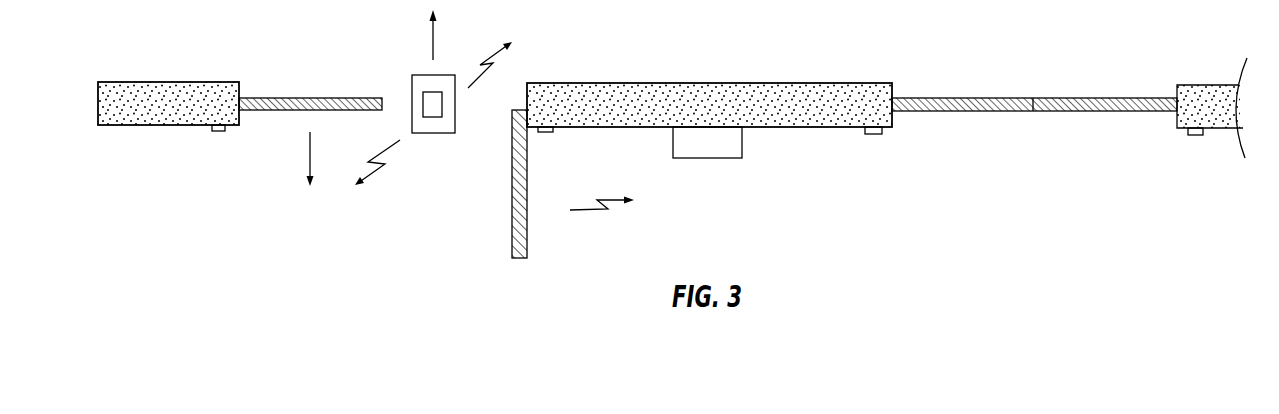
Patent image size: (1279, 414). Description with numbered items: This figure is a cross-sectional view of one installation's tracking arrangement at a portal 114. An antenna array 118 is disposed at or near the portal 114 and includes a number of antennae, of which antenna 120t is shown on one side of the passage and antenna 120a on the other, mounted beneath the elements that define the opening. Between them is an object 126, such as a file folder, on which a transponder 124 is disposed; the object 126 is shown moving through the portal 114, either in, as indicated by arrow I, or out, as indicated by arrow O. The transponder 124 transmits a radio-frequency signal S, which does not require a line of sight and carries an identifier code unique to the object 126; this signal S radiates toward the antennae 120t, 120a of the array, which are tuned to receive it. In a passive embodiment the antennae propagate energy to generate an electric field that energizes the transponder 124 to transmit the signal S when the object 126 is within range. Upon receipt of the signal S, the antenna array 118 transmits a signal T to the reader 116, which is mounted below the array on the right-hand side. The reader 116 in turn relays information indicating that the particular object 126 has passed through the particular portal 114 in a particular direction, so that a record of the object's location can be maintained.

The portal 114 is at (293, 63).
The antenna array 118 is at (167, 188).
The antenna 120t is at (217, 132).
The antenna 120a is at (545, 133).
The transponder 124 is at (431, 118).
The object 126 is at (418, 75).
The reader 116 is at (722, 158).
The arrow O is at (307, 153).
The signal S is at (435, 117).
The arrow I is at (435, 43).
The signal T is at (600, 213).